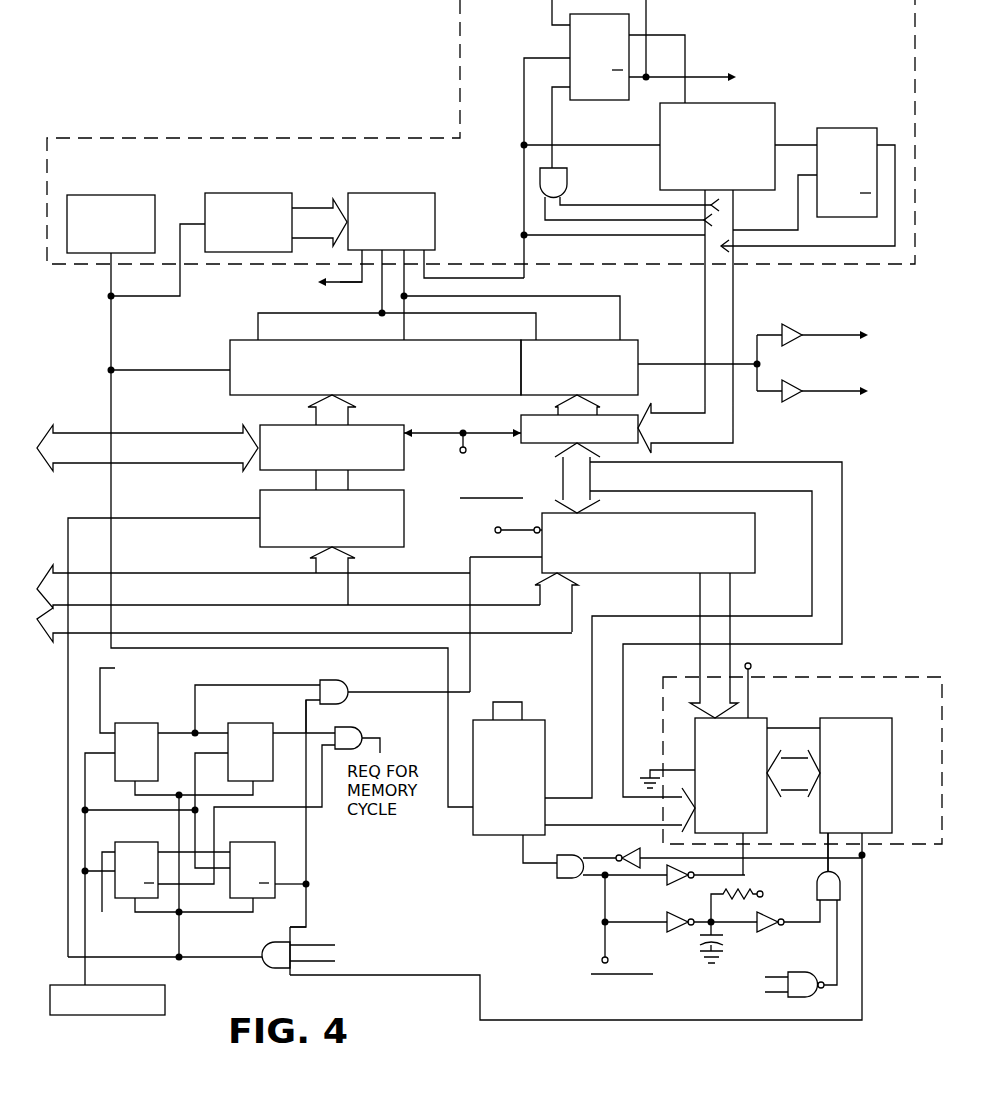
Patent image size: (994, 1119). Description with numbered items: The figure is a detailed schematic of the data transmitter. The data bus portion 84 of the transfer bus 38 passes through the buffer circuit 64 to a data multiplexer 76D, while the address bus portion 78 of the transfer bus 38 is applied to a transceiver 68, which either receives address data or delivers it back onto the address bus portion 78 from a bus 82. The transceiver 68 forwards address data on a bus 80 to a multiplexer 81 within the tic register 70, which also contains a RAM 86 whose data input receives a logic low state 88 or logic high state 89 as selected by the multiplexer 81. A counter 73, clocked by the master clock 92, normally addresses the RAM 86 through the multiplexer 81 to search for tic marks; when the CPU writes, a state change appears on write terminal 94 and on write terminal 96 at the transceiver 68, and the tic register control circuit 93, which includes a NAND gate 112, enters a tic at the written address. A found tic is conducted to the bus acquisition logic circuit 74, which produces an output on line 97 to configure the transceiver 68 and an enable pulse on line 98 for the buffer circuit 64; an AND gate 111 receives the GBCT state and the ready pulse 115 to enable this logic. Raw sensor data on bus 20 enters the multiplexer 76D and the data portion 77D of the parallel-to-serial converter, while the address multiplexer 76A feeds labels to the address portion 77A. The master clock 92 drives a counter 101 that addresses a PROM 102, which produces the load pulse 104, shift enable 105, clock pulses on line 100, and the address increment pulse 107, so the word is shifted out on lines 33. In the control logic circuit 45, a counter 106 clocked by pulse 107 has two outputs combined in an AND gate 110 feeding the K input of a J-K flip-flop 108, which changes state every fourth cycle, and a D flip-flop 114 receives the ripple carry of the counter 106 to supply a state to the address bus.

The control logic circuit 45 is at (460, 30).
The master clock 92 is at (103, 195).
The counter 101 is at (243, 193).
The PROM 102 is at (368, 193).
The ready pulse line 115 is at (344, 282).
The load pulse line 104 is at (258, 322).
The shift enable line 105 is at (622, 303).
The clock pulse line 100 is at (111, 370).
The data portion of parallel-to-serial converter 77D is at (230, 380).
The address portion of parallel-to-serial converter 77A is at (638, 346).
The data multiplexer 76D is at (262, 425).
The address multiplexer 76A is at (521, 418).
The bus 20 is at (160, 478).
The buffer circuit 64 is at (380, 547).
The transfer bus 38 is at (145, 565).
The data bus portion of transfer bus 84 is at (200, 573).
The address bus portion of transfer bus 78 is at (524, 633).
The write terminal 96 is at (495, 536).
The transceiver 68 is at (635, 573).
The bus 82 is at (842, 566).
The bus 80 is at (730, 590).
The tic register 70 is at (900, 677).
The logic high state terminal 89 is at (752, 668).
The multiplexer 81 is at (760, 718).
The RAM 86 is at (850, 718).
The logic low state 88 is at (650, 770).
The counter 73 is at (490, 835).
The bus acquisition logic circuit 74 is at (324, 866).
The line 97 is at (378, 690).
The enable line 98 is at (180, 960).
The AND gate 111 is at (275, 968).
The tic register control circuit 93 is at (585, 916).
The write terminal 94 is at (600, 962).
The NAND gate 112 is at (803, 972).
The J-K flip-flop 108 is at (570, 45).
The address increment pulse line 107 is at (524, 145).
The AND gate 110 is at (567, 180).
The counter 106 is at (775, 113).
The D flip-flop 114 is at (852, 128).
The output lines 33 is at (838, 337).